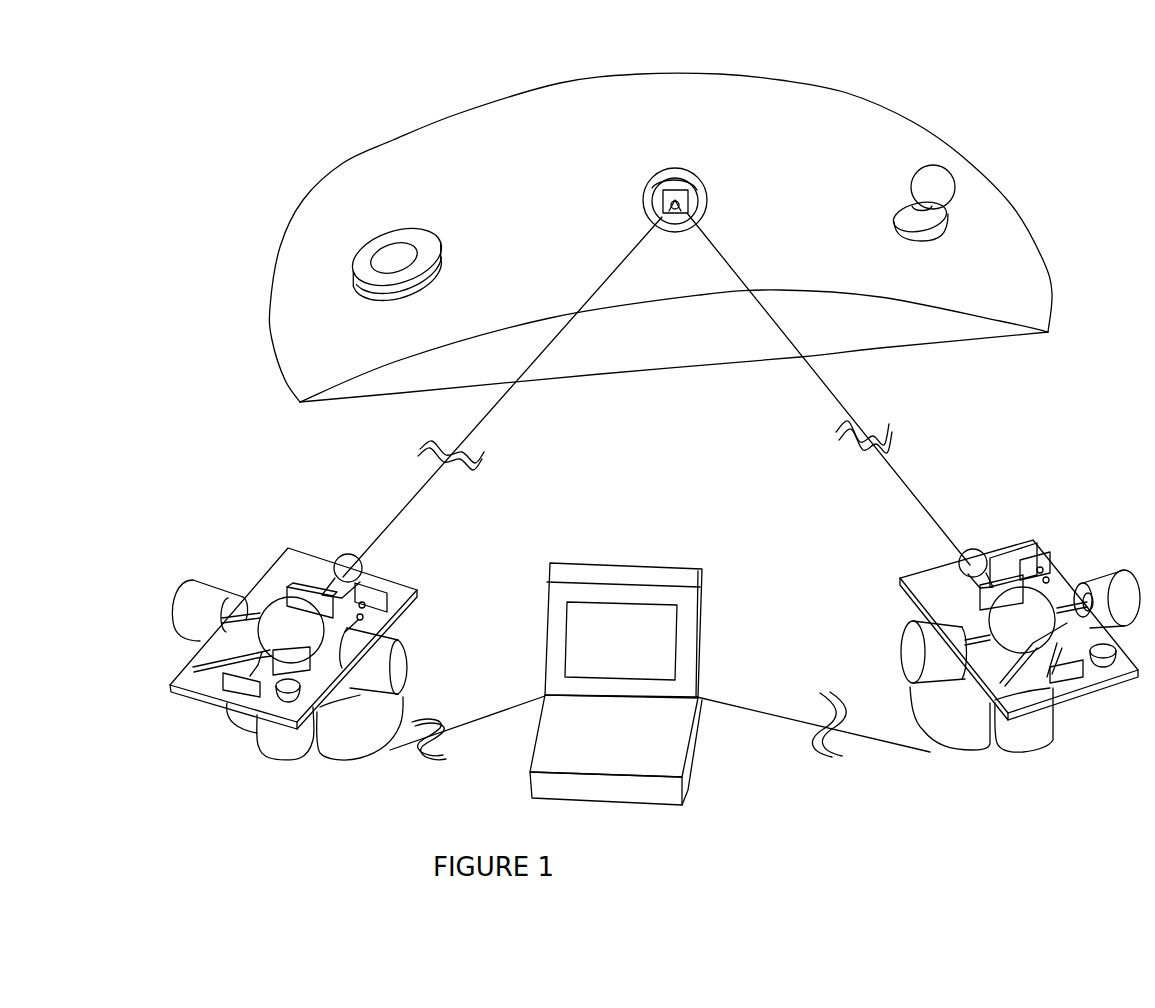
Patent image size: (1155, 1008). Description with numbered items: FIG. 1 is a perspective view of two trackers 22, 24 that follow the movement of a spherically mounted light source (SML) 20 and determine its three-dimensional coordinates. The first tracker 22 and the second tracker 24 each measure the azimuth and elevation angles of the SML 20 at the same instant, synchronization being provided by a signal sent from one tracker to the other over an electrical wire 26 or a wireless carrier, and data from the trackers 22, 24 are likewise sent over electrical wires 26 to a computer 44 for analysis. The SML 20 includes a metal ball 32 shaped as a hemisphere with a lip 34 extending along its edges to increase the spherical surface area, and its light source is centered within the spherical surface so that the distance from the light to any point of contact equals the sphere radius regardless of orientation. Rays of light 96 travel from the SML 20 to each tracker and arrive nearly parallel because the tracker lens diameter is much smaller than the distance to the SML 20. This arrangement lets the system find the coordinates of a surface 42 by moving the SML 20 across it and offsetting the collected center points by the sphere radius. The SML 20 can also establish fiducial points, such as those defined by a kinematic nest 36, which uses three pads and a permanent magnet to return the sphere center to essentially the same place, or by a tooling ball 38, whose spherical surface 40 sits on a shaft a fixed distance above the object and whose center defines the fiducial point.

The spherically mounted light source 20 is at (660, 217).
The first tracker 22 is at (315, 632).
The second tracker 24 is at (1020, 609).
The electrical wire 26 is at (660, 694).
The metal ball 32 is at (702, 197).
The lip 34 is at (713, 210).
The kinematic nest 36 is at (388, 227).
The tooling ball 38 is at (1000, 201).
The spherical surface 40 is at (983, 158).
The surface 42 is at (674, 347).
The computer 44 is at (626, 654).
The rays of light 96 is at (656, 395).